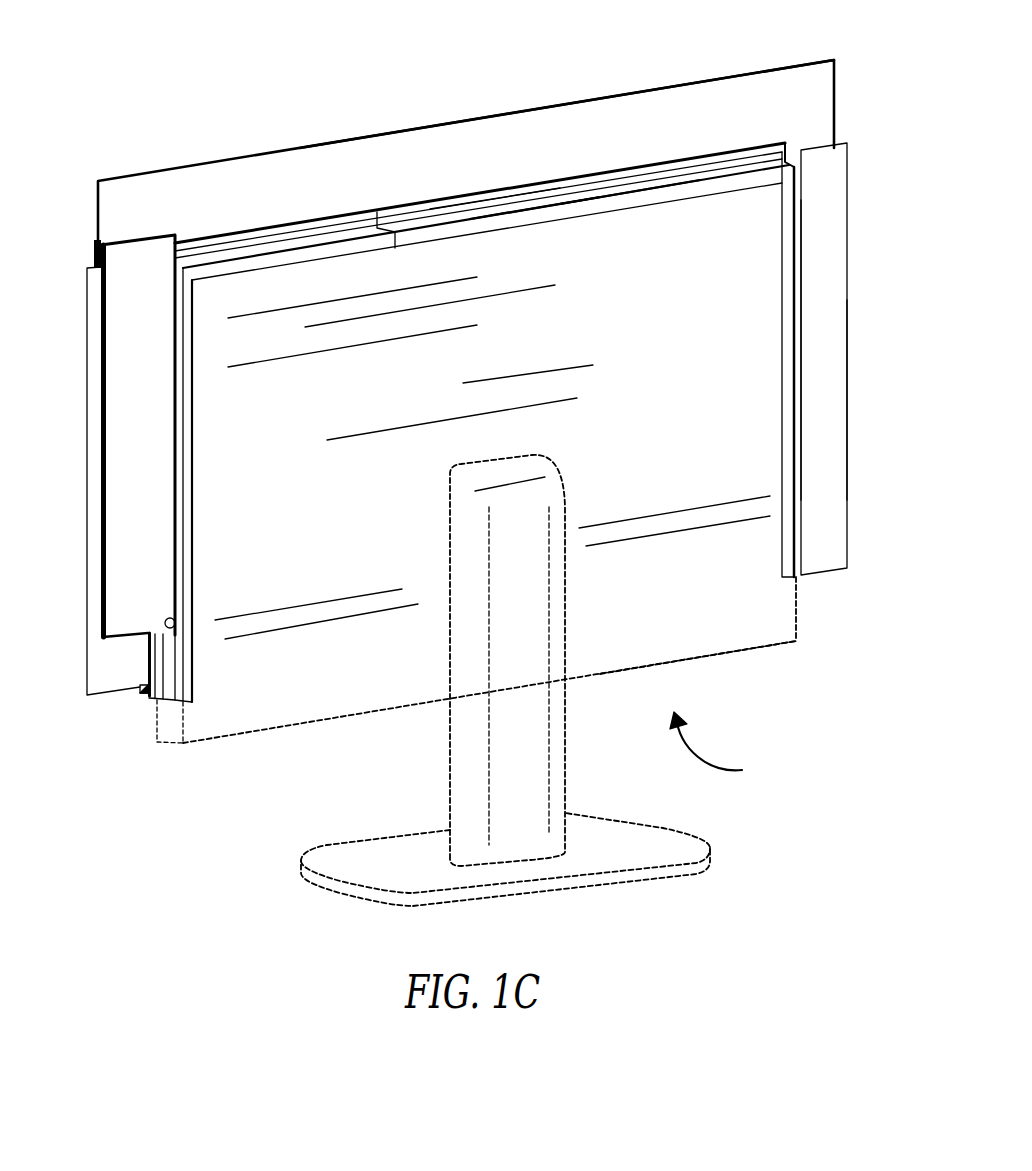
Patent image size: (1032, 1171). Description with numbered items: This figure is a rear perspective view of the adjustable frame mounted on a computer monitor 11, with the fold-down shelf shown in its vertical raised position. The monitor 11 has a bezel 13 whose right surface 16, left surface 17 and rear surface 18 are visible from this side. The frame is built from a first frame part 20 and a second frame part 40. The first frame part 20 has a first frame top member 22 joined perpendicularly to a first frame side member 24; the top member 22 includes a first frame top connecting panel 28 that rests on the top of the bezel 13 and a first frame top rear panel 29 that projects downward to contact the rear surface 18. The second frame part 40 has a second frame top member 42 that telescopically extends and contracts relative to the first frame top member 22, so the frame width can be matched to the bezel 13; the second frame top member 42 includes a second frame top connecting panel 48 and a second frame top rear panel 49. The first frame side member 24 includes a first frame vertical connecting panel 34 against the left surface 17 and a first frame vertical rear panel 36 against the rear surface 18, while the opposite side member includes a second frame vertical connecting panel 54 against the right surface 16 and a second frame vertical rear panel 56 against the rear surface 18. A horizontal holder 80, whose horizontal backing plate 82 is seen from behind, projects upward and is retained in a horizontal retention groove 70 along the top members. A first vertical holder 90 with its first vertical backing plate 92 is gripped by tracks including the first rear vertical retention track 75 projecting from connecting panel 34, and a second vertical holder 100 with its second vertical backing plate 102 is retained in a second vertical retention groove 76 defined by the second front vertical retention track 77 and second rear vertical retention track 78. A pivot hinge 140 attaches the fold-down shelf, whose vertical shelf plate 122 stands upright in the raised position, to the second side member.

The computer monitor 11 is at (716, 752).
The bezel 13 is at (795, 642).
The right surface 16 is at (798, 603).
The left surface 17 is at (173, 740).
The rear surface 18 is at (725, 603).
The first frame part 20 is at (625, 203).
The first frame top member 22 is at (473, 230).
The first frame side member 24 is at (798, 287).
The first frame top connecting panel 28 is at (502, 212).
The first frame top rear panel 29 is at (533, 220).
The first frame vertical connecting panel 34 is at (797, 157).
The first frame vertical rear panel 36 is at (790, 357).
The second frame part 40 is at (218, 260).
The second frame top member 42 is at (313, 270).
The second frame top connecting panel 48 is at (363, 240).
The second frame top rear panel 49 is at (373, 225).
The second frame vertical connecting panel 54 is at (170, 695).
The second frame vertical rear panel 56 is at (192, 703).
The horizontal retention groove 70 is at (787, 145).
The first rear vertical retention track 75 is at (800, 450).
The second vertical retention groove 76 is at (148, 700).
The second front vertical retention track 77 is at (142, 695).
The second rear vertical retention track 78 is at (160, 700).
The horizontal holder 80 is at (833, 62).
The horizontal backing plate 82 is at (768, 80).
The first vertical holder 90 is at (847, 415).
The first vertical backing plate 92 is at (833, 195).
The second vertical holder 100 is at (93, 528).
The second vertical backing plate 102 is at (105, 687).
The vertical shelf plate 122 is at (118, 628).
The pivot hinge 140 is at (174, 620).